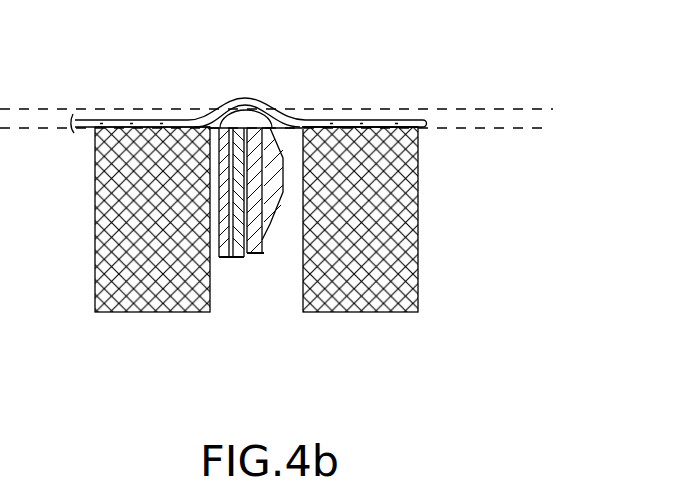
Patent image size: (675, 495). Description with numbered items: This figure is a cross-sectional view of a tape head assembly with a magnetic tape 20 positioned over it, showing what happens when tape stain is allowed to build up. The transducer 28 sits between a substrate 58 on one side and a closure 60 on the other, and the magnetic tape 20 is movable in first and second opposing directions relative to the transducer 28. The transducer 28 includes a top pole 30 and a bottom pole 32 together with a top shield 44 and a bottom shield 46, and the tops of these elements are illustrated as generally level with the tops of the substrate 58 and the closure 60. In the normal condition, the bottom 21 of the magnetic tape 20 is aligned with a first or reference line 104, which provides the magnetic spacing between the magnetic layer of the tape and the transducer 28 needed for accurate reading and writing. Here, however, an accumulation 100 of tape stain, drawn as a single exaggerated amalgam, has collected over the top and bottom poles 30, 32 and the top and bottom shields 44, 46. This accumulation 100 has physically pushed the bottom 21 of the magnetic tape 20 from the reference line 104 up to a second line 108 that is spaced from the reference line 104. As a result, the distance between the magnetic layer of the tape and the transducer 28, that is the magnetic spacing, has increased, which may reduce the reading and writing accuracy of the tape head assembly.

The magnetic tape 20 is at (117, 110).
The tape stain accumulation 100 is at (257, 123).
The second line 108 is at (538, 108).
The reference line 104 is at (560, 128).
The substrate 58 is at (95, 193).
The closure 60 is at (420, 200).
The bottom of the magnetic tape 21 is at (418, 128).
The transducer 28 is at (230, 325).
The bottom shield 46 is at (222, 258).
The top shield 44 is at (238, 258).
The bottom pole 32 is at (250, 185).
The top pole 30 is at (272, 145).